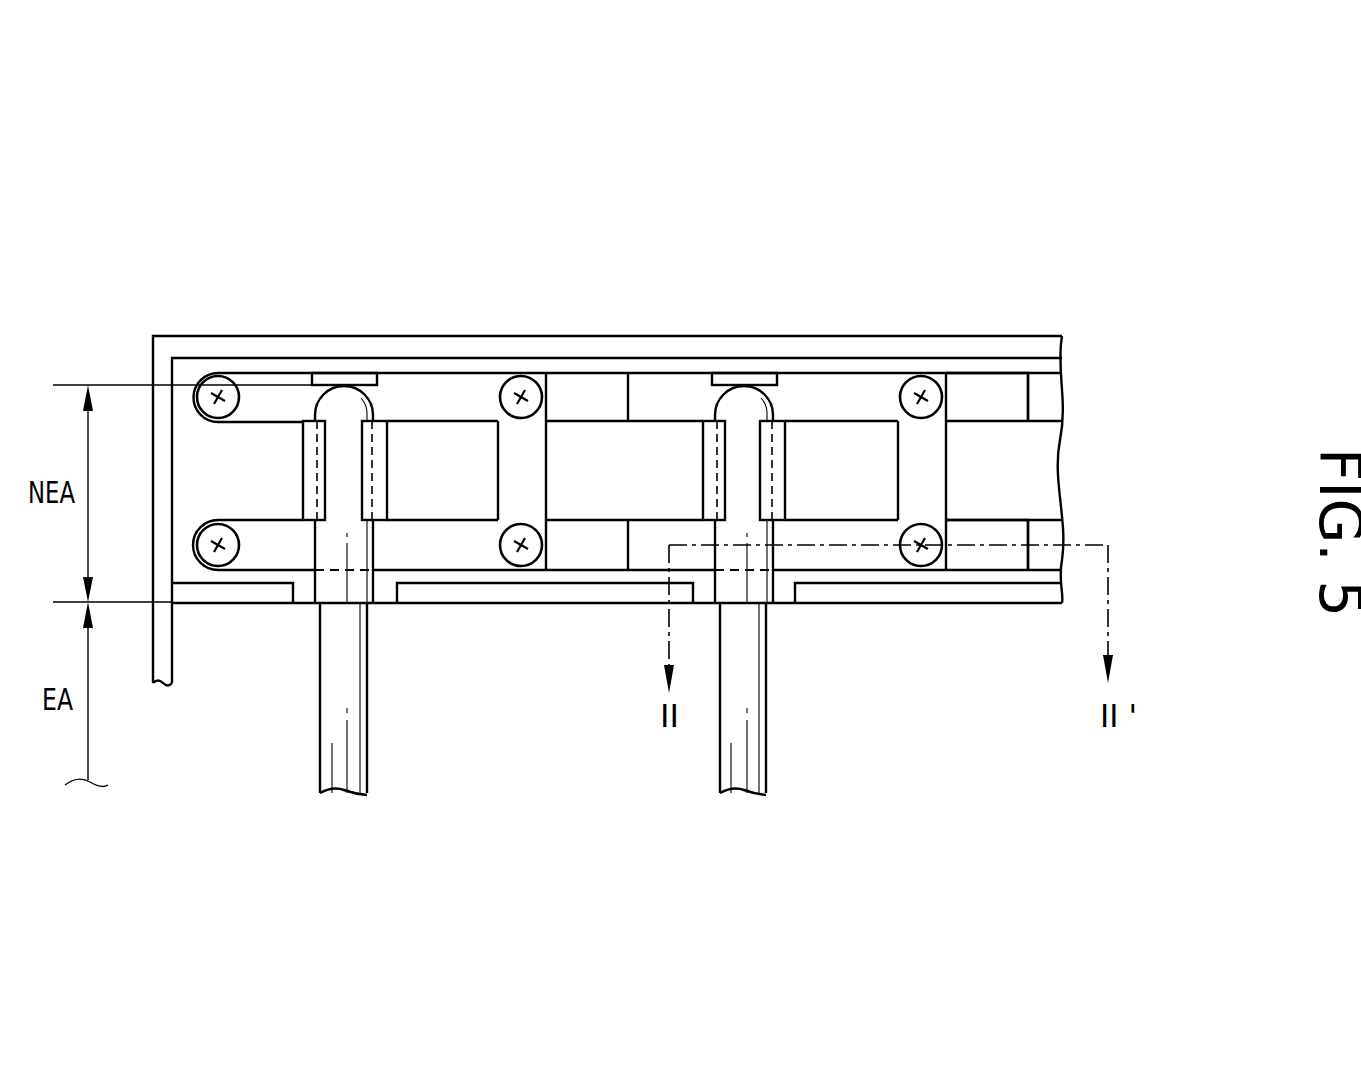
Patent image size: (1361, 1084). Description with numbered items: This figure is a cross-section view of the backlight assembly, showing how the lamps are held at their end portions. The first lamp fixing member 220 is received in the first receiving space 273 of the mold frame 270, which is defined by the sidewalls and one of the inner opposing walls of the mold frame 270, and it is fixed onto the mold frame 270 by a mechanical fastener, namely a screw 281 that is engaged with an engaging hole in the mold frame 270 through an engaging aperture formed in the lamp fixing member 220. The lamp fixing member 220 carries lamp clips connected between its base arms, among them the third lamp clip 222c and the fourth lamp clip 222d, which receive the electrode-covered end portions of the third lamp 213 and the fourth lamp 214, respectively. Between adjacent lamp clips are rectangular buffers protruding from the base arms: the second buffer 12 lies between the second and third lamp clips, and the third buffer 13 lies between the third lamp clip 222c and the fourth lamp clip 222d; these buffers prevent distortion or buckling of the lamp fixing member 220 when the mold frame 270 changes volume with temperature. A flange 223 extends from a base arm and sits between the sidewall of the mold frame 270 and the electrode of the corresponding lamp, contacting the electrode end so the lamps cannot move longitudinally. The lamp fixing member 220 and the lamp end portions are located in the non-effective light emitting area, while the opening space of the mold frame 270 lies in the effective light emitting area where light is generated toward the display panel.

The mold frame 270 is at (180, 279).
The first lamp fixing member 220 is at (1096, 410).
The first receiving space 273 is at (1047, 465).
The third buffer 13 is at (587, 395).
The second buffer 12 is at (989, 395).
The screw 281 is at (216, 556).
The fourth lamp clip 222d is at (322, 432).
The flange 223 is at (720, 378).
The third lamp clip 222c is at (723, 432).
The fourth lamp 214 is at (355, 673).
The third lamp 213 is at (753, 673).